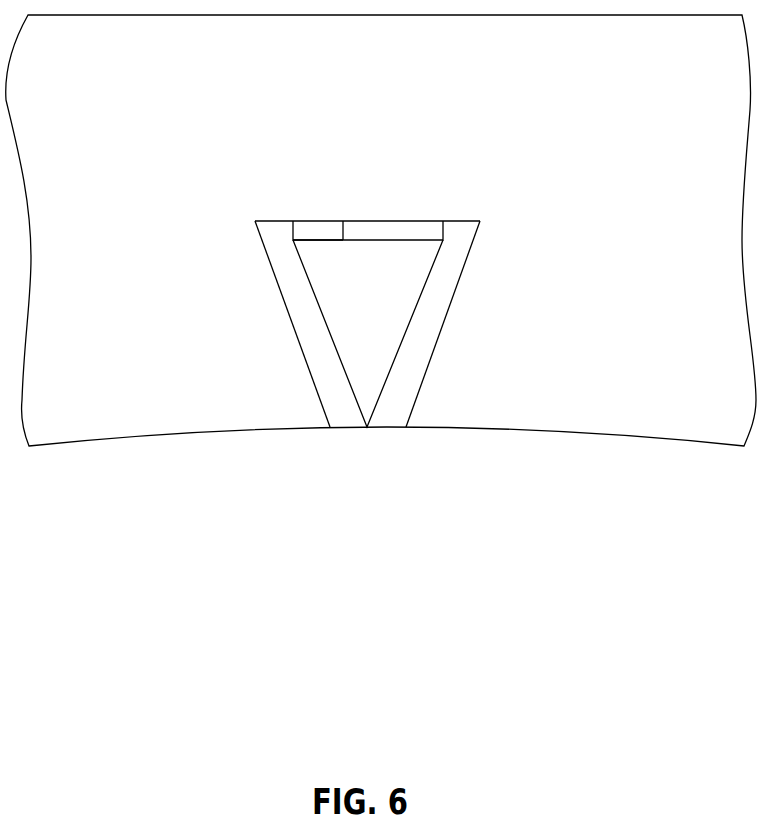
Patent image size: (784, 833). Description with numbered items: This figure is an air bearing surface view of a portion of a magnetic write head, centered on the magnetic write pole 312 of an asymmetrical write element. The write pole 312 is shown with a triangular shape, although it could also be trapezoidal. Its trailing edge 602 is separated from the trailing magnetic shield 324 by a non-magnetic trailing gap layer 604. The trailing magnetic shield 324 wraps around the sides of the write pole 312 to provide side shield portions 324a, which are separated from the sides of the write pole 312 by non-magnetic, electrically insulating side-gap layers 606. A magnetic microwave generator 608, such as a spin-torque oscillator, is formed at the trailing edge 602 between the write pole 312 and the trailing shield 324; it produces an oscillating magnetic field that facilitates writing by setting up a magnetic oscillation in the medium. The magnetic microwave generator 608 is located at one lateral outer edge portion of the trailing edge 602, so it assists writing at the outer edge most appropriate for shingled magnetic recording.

The trailing magnetic shield 324 is at (415, 118).
The side shield portions 324a is at (148, 300).
The side-gap layers 606 is at (291, 292).
The non-magnetic trailing gap layer 604 is at (413, 231).
The trailing edge 602 is at (377, 234).
The magnetic microwave generator 608 is at (322, 231).
The magnetic write pole 312 is at (397, 276).